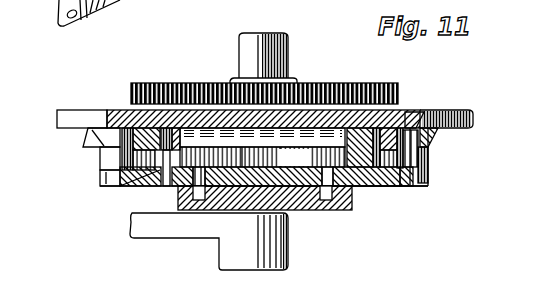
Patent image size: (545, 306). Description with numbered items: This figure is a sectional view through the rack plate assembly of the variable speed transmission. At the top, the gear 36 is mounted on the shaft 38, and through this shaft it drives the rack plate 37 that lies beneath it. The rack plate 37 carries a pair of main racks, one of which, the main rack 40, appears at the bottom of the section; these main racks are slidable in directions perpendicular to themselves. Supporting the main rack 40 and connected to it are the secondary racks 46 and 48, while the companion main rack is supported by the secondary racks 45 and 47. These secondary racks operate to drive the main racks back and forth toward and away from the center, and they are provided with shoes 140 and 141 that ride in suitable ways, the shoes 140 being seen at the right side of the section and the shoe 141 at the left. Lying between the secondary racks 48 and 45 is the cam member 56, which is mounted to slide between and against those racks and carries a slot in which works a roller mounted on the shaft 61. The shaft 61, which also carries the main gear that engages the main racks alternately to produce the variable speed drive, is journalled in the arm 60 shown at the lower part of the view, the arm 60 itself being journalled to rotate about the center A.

The gear 36 is at (333, 85).
The rack plate 37 is at (474, 118).
The shaft 38 is at (290, 51).
The main rack 40 is at (342, 211).
The secondary rack 45 is at (366, 185).
The secondary rack 46 is at (430, 157).
The secondary rack 47 is at (100, 160).
The secondary rack 48 is at (117, 187).
The cam member 56 is at (262, 148).
The arm 60 is at (209, 248).
The shaft 61 is at (230, 213).
The shoe 140 is at (378, 133).
The shoe 141 is at (100, 145).